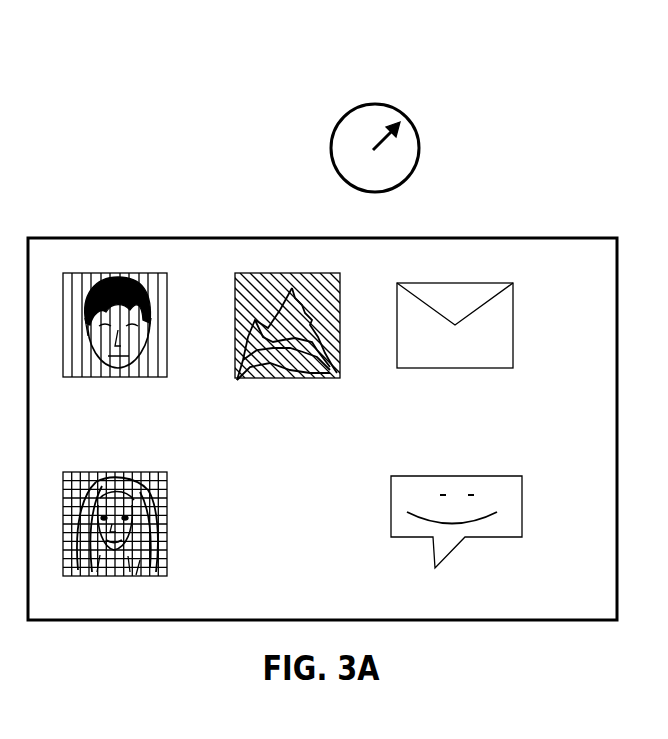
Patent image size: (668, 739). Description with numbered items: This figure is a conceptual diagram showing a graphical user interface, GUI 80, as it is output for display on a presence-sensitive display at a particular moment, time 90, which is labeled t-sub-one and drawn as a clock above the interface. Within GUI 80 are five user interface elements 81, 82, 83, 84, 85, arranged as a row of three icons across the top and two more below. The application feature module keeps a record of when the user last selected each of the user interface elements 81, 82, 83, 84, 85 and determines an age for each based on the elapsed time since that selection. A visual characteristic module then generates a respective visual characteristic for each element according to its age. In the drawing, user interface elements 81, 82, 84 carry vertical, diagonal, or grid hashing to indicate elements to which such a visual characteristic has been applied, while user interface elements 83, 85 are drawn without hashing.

The GUI 80 is at (557, 312).
The user interface element 81 is at (169, 282).
The user interface element 82 is at (342, 287).
The user interface element 83 is at (515, 366).
The user interface element 84 is at (169, 507).
The user interface element 85 is at (521, 477).
The time 90 is at (378, 97).